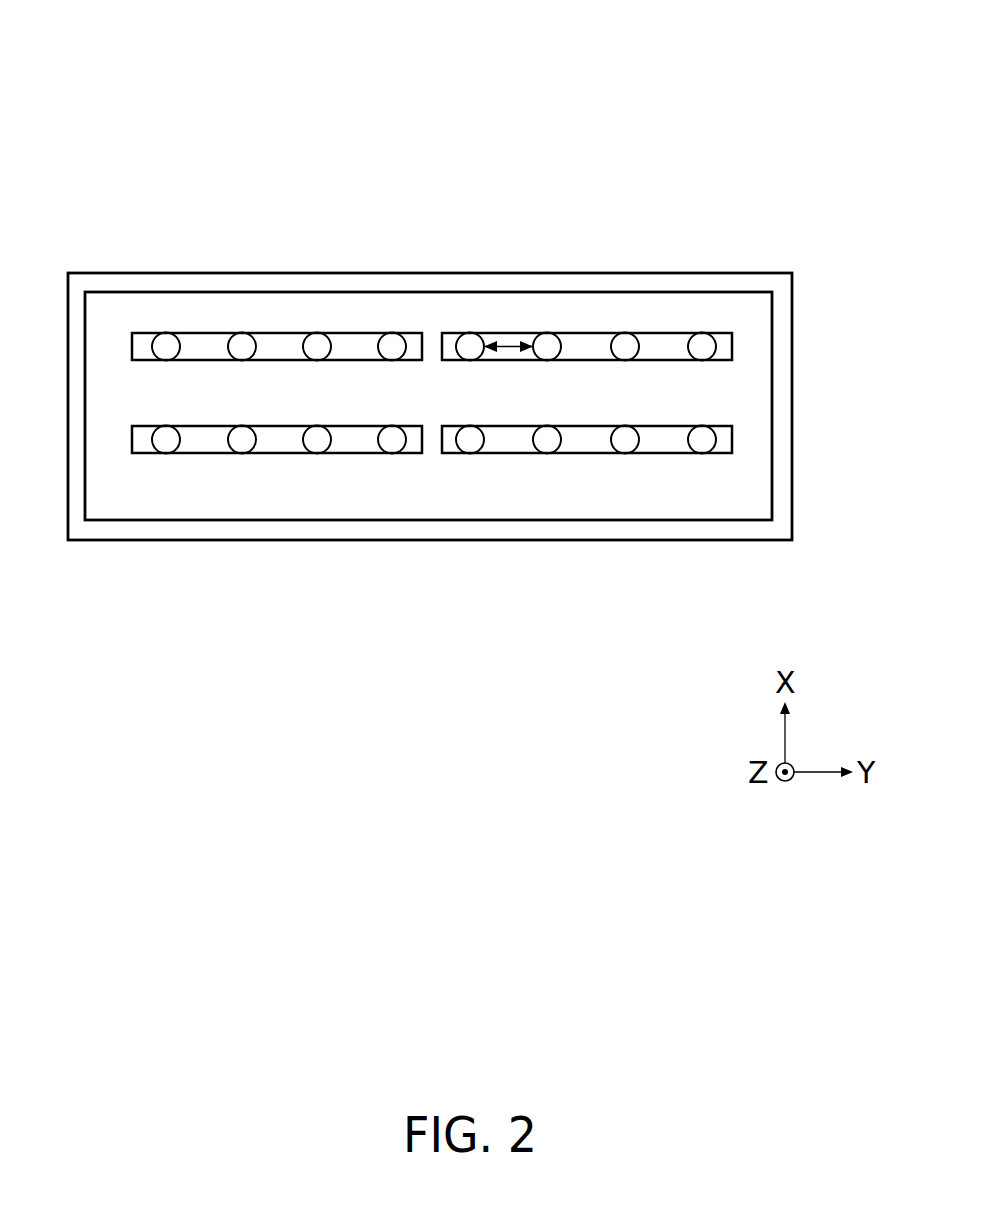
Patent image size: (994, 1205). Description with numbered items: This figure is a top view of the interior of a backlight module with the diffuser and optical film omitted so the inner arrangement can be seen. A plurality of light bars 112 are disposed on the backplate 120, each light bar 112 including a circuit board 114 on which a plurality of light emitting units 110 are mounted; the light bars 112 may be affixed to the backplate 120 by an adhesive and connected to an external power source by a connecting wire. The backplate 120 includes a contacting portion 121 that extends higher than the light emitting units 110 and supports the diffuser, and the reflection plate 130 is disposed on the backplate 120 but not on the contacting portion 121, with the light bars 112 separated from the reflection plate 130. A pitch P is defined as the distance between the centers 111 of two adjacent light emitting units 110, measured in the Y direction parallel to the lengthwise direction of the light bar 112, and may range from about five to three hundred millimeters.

The light emitting unit 110 is at (483, 333).
The center 111 is at (467, 336).
The light bar 112 is at (602, 333).
The circuit board 114 is at (450, 333).
The backplate 120 is at (763, 250).
The contacting portion 121 is at (780, 298).
The reflection plate 130 is at (758, 330).
The pitch P is at (507, 362).